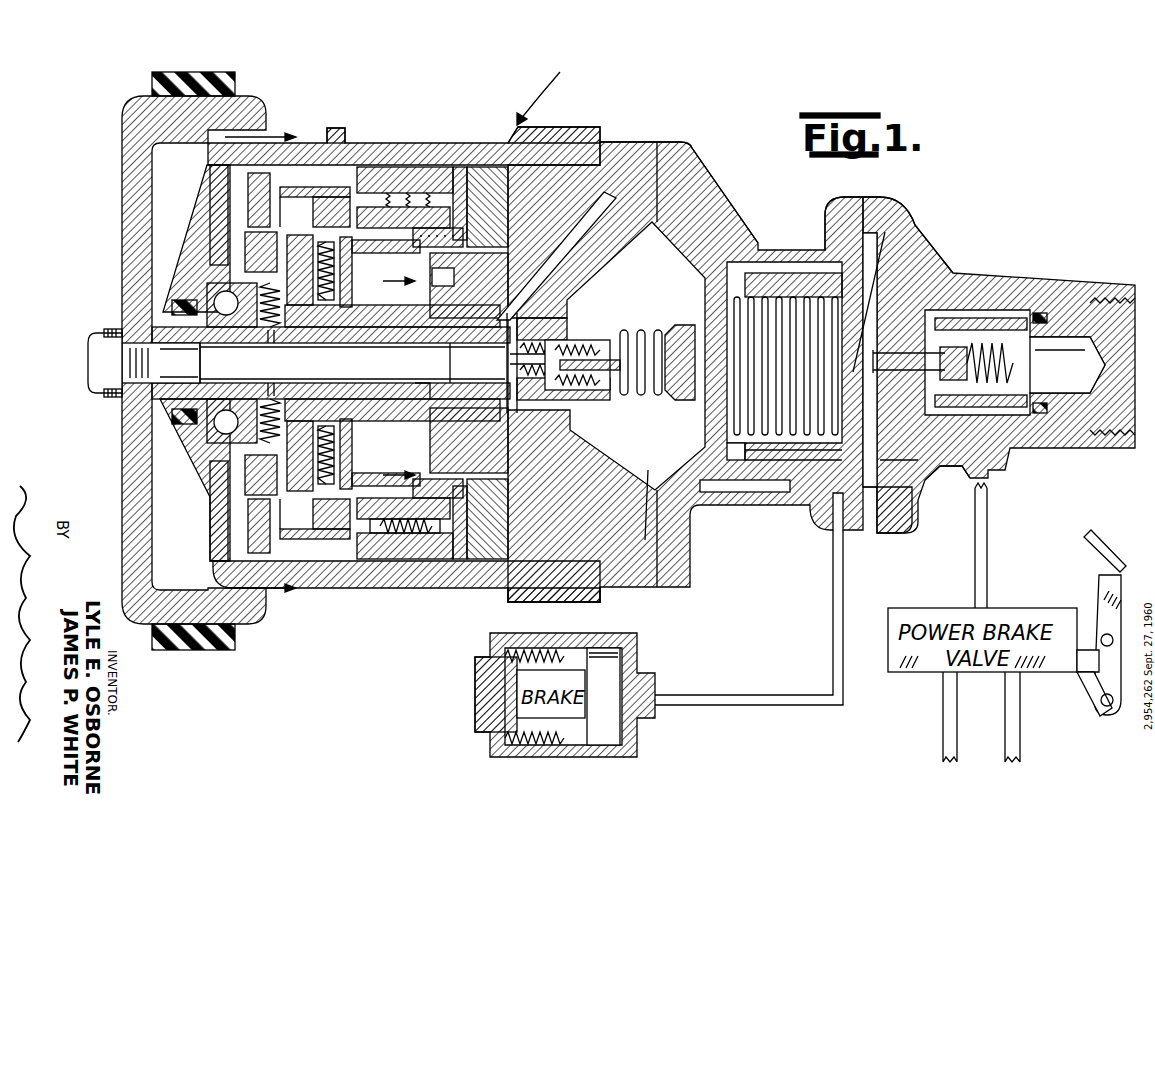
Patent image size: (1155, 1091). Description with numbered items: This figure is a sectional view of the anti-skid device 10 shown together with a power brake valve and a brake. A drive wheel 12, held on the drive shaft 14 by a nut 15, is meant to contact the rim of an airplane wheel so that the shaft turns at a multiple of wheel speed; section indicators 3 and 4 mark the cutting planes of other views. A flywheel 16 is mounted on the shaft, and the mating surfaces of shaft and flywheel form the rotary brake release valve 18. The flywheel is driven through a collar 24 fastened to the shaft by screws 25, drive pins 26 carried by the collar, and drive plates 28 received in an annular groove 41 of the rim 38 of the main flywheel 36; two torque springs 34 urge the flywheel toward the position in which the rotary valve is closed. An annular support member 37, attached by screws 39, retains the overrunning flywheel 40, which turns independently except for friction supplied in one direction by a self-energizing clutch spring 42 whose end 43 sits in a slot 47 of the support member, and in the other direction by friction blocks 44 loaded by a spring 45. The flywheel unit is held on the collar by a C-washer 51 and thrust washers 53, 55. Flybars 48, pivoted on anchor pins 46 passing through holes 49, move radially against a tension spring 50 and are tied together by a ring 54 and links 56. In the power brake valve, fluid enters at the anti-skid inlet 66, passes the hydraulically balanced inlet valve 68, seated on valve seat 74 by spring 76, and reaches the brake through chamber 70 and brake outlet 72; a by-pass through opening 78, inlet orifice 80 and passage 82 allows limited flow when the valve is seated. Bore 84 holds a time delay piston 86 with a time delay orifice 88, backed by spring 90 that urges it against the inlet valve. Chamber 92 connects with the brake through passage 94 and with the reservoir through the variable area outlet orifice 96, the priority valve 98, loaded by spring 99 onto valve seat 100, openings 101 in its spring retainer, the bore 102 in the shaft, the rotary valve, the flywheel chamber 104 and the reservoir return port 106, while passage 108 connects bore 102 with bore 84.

The section line 3- 3 is at (260, 364).
The section line 4- 4 is at (399, 378).
The anti-skid device 10 is at (582, 68).
The drive wheel 12 is at (128, 98).
The drive shaft 14 is at (150, 328).
The nut 15 is at (100, 338).
The flywheel 16 is at (357, 150).
The rotary valve 18 is at (336, 368).
The collar 24 is at (325, 135).
The screws 25 is at (268, 395).
The drive pins 26 is at (248, 240).
The drive plates 28 is at (248, 185).
The torque springs 34 is at (232, 292).
The main flywheel 36 is at (347, 173).
The annular support member 37 is at (497, 143).
The rim 38 is at (205, 168).
The screws 39 is at (440, 280).
The overrunning flywheel 40 is at (445, 235).
The annular groove 41 is at (213, 180).
The self-energizing clutch spring 42 is at (467, 510).
The clutch spring end 43 is at (483, 262).
The friction blocks 44 is at (438, 548).
The spring 45 is at (407, 188).
The flybar anchor pins 46 is at (310, 205).
The slot 47 is at (362, 322).
The flybars 48 is at (328, 240).
The holes 49 is at (278, 205).
The flybar and latch tension spring 50 is at (208, 478).
The C-washer 51 is at (450, 302).
The thrust washer 53 is at (303, 328).
The ring 54 is at (378, 545).
The thrust washer 55 is at (450, 355).
The links 56 is at (358, 172).
The anti-skid inlet 66 is at (980, 478).
The hydraulically balanced inlet valve 68 is at (958, 462).
The chamber 70 is at (880, 533).
The brake outlet 72 is at (835, 540).
The valve seat 74 is at (880, 475).
The spring 76 is at (1022, 318).
The opening 78 is at (955, 460).
The inlet orifice 80 is at (912, 343).
The passage 82 is at (915, 325).
The bore 84 is at (773, 278).
The time delay piston 86 is at (813, 275).
The time delay orifice 88 is at (887, 232).
The spring 90 is at (746, 440).
The chamber 92 is at (645, 540).
The passage 94 is at (755, 492).
The variable area flow control outlet orifice 96 is at (700, 384).
The priority valve 98 is at (592, 358).
The spring 99 is at (590, 378).
The valve seat 100 is at (612, 340).
The openings 101 is at (517, 378).
The bore 102 is at (422, 385).
The flywheel chamber 104 is at (420, 238).
The reservoir return port 106 is at (618, 152).
The passage 108 is at (680, 214).